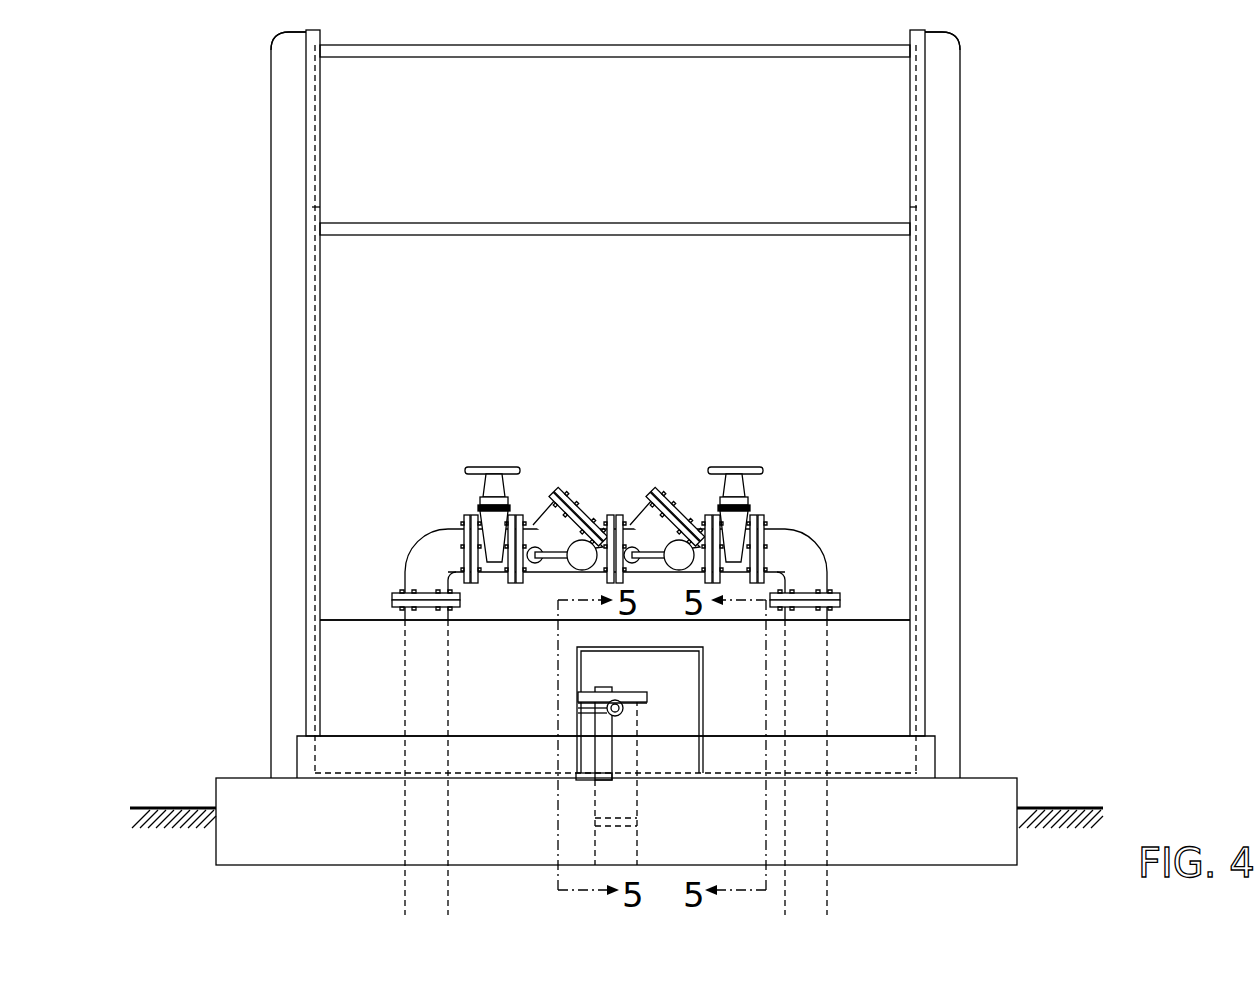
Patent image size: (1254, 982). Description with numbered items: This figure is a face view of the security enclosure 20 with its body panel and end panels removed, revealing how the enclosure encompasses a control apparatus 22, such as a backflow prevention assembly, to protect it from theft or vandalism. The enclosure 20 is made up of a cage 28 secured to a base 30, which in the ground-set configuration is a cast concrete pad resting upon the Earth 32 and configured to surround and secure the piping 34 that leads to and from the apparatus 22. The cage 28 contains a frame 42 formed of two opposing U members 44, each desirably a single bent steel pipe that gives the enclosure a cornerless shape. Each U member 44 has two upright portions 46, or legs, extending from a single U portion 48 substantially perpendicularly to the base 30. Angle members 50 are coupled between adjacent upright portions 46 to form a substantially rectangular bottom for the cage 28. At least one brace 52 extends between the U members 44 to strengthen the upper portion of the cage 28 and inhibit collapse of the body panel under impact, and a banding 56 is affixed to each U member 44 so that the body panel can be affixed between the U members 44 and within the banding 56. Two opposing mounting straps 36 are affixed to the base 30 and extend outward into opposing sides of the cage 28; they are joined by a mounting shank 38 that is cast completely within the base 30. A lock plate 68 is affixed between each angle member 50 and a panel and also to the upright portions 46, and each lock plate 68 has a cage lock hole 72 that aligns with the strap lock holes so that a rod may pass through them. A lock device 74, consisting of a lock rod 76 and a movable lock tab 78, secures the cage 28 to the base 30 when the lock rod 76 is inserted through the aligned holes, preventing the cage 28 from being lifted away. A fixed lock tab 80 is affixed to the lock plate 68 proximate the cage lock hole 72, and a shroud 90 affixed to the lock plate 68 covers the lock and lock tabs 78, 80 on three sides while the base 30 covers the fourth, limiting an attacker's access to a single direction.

The security enclosure 20 is at (1156, 672).
The apparatus 22 is at (517, 422).
The cage 28 is at (1072, 196).
The base 30 is at (232, 793).
The Earth 32 is at (140, 805).
The piping 34 is at (425, 873).
The mounting straps 36 is at (610, 797).
The mounting shank 38 is at (613, 822).
The frame 42 is at (721, 404).
The U member 44 is at (279, 308).
The upright portions 46 is at (279, 440).
The U portion 48 is at (279, 110).
The angle members 50 is at (888, 763).
The brace 52 is at (722, 52).
The banding 56 is at (312, 207).
The lock plate 68 is at (888, 676).
The cage lock hole 72 is at (577, 718).
The lock device 74 is at (578, 708).
The lock rod 76 is at (578, 713).
The lock tab 78 is at (578, 703).
The lock tab 80 is at (578, 698).
The shroud 90 is at (578, 692).